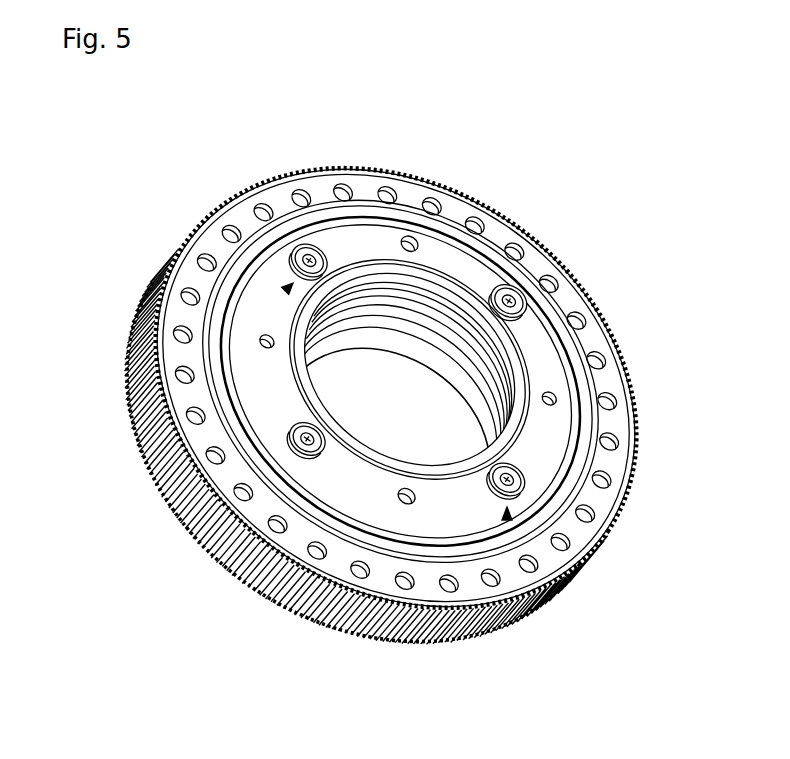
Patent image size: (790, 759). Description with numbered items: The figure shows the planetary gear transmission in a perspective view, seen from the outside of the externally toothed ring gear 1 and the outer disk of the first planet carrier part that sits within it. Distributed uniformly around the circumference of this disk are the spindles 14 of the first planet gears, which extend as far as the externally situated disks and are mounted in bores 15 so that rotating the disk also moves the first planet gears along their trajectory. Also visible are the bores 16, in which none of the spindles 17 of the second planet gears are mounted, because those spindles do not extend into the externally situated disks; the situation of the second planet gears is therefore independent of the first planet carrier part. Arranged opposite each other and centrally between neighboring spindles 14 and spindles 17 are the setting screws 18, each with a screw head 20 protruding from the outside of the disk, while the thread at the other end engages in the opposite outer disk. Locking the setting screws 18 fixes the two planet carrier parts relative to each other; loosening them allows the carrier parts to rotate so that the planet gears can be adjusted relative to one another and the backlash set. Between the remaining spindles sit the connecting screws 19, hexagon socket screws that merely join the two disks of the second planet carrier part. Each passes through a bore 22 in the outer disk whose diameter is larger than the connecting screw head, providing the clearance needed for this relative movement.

The ring gear 1 is at (496, 240).
The spindles of the first planet gears 14 is at (258, 348).
The bores 15 is at (266, 356).
The bores 16 is at (395, 497).
The spindles of the second planet gears 17 is at (412, 502).
The setting screws 18 is at (296, 250).
The connecting screws 19 is at (168, 478).
The screw head 20 is at (283, 292).
The bore 22 is at (296, 455).